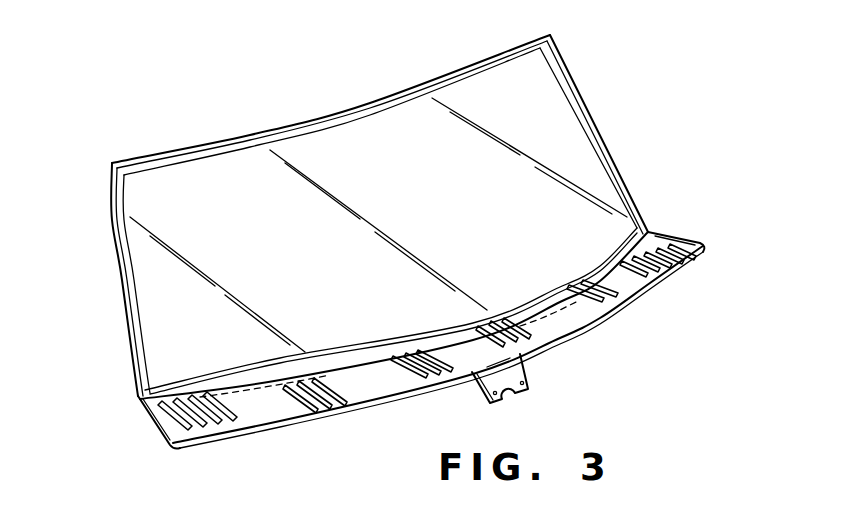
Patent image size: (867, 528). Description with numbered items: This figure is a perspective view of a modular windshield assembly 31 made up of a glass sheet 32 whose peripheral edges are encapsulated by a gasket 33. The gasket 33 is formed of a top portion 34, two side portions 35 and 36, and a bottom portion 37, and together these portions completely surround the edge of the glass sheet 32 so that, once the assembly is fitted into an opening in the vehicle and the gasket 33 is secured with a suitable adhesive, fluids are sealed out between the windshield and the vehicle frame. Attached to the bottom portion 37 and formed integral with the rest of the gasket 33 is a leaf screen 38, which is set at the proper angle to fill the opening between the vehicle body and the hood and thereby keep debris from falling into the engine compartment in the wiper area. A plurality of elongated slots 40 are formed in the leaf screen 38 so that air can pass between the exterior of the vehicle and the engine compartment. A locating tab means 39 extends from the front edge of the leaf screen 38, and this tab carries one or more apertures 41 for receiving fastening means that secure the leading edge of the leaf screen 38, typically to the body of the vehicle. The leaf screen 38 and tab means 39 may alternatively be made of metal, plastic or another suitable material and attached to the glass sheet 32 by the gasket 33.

The modular windshield assembly 31 is at (158, 128).
The glass sheet 32 is at (255, 180).
The gasket 33 is at (113, 213).
The top portion 34 is at (385, 102).
The side portion 35 is at (600, 130).
The side portion 36 is at (128, 300).
The bottom portion 37 is at (360, 354).
The leaf screen 38 is at (595, 322).
The locating tab means 39 is at (488, 377).
The elongated slots 40 is at (226, 426).
The apertures 41 is at (524, 387).